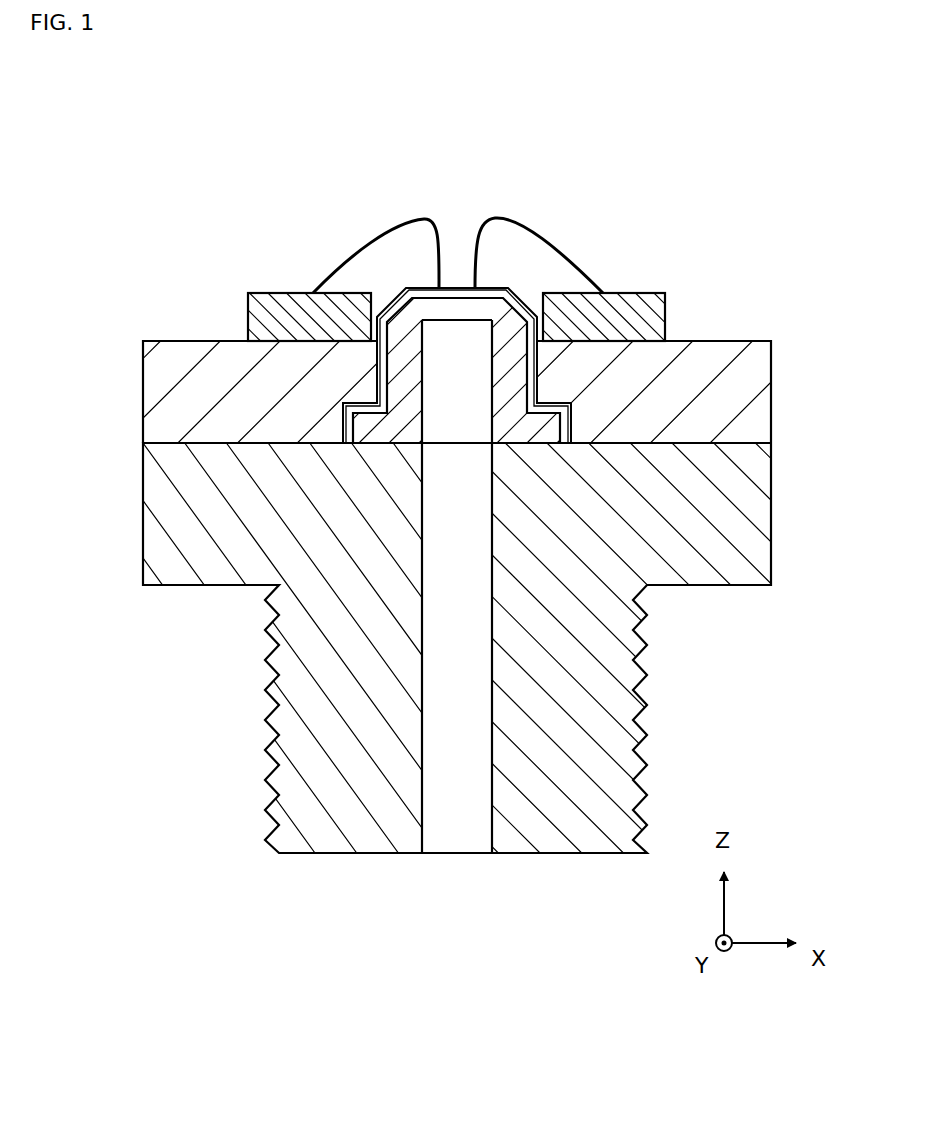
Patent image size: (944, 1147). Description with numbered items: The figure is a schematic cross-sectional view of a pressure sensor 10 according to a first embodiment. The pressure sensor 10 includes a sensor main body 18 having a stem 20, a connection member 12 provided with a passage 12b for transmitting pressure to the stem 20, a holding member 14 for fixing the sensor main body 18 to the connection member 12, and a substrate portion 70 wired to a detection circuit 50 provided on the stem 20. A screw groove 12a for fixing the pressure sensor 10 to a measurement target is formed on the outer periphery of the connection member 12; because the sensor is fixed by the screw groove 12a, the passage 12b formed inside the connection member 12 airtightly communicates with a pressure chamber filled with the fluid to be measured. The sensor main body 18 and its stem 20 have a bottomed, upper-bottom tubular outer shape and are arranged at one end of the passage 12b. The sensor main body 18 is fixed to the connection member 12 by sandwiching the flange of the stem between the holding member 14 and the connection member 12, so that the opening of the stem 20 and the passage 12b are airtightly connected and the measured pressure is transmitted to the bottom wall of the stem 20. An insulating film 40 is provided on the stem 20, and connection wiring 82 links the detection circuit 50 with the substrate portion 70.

The pressure sensor 10 is at (247, 231).
The connection member 12 is at (782, 487).
The screw groove 12a is at (640, 663).
The passage 12b is at (461, 843).
The holding member 14 is at (745, 366).
The sensor main body 18 is at (411, 280).
The stem 20 is at (514, 325).
The insulating film 40 is at (503, 291).
The detection circuit 50 is at (462, 288).
The substrate portion 70 is at (633, 300).
The connection wiring 82 is at (381, 232).